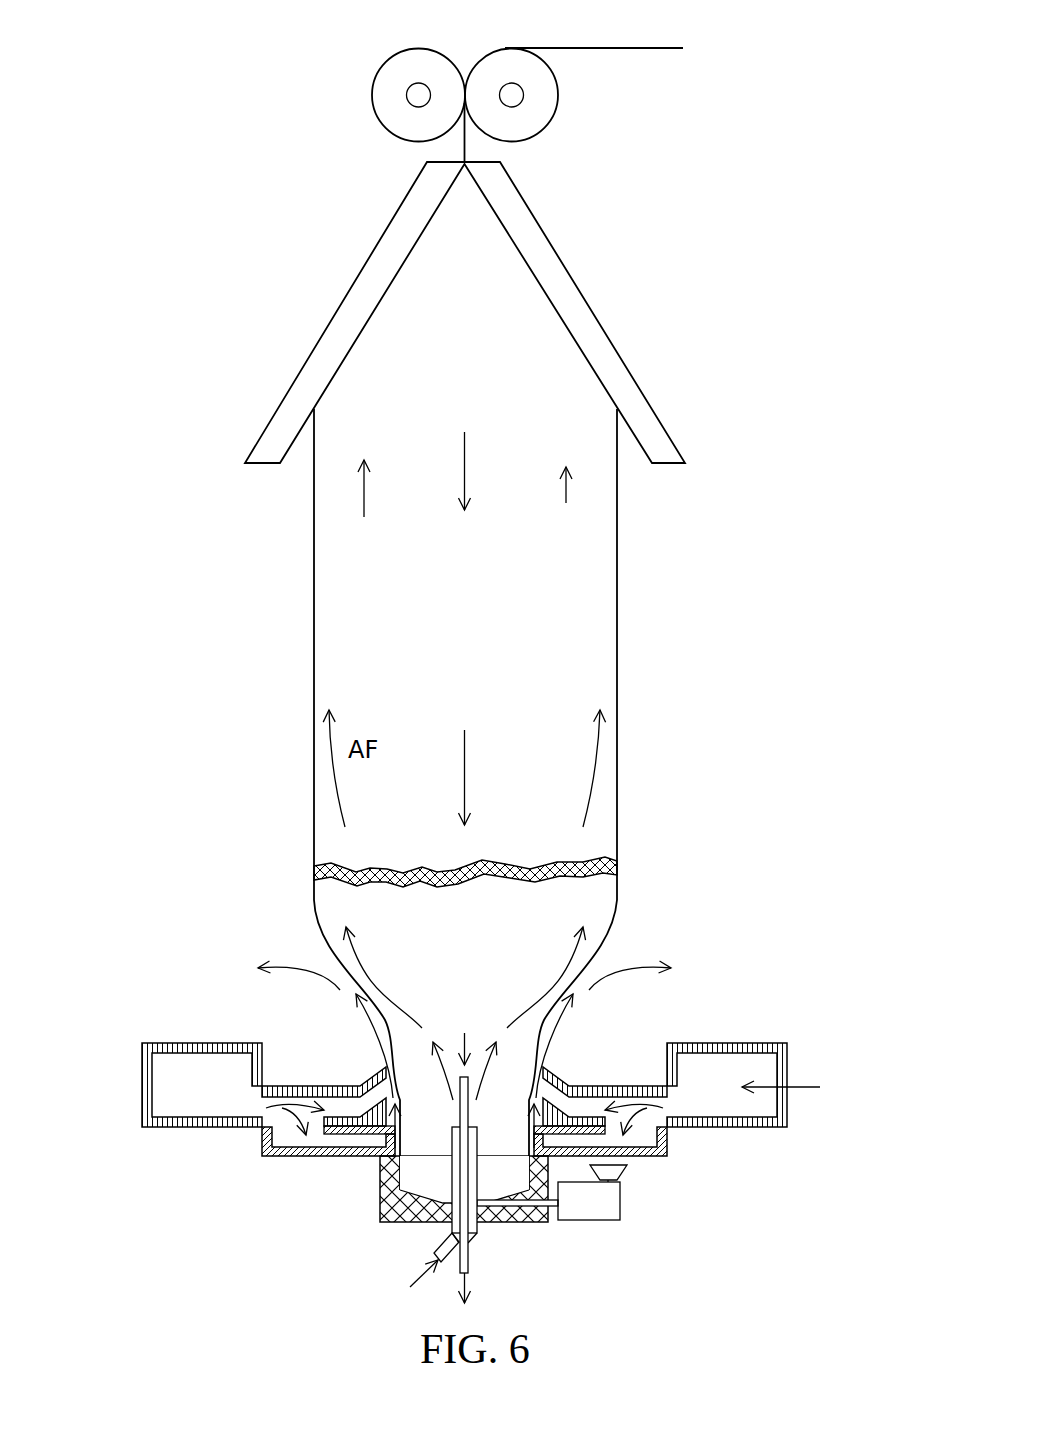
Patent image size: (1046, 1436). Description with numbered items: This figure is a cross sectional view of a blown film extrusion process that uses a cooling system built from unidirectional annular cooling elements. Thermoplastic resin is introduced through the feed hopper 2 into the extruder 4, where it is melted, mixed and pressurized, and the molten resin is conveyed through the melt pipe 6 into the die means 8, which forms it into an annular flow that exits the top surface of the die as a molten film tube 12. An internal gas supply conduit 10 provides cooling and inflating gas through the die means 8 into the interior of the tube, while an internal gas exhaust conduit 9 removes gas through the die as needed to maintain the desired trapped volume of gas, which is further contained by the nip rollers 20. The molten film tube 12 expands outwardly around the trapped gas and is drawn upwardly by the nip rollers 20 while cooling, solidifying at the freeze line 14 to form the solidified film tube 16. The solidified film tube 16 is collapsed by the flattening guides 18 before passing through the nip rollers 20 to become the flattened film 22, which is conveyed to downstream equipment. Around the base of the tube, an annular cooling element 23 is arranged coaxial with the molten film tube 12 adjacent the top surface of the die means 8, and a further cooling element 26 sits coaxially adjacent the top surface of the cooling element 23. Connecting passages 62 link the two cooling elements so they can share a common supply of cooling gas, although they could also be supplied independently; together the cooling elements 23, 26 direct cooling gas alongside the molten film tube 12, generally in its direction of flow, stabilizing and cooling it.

The feed hopper 2 is at (613, 1172).
The extruder 4 is at (613, 1208).
The melt pipe 6 is at (557, 1210).
The die means 8 is at (380, 1182).
The internal gas exhaust conduit 9 is at (470, 1262).
The internal gas supply conduit 10 is at (443, 1240).
The molten film tube 12 is at (617, 907).
The freeze line 14 is at (617, 867).
The solidified film tube 16 is at (617, 830).
The flattening guides 18 is at (337, 313).
The nip rollers 20 is at (382, 123).
The flattened film 22 is at (548, 48).
The annular cooling element 23 is at (672, 1147).
The cooling element 26 is at (170, 1048).
The connecting passages 62 is at (282, 1132).